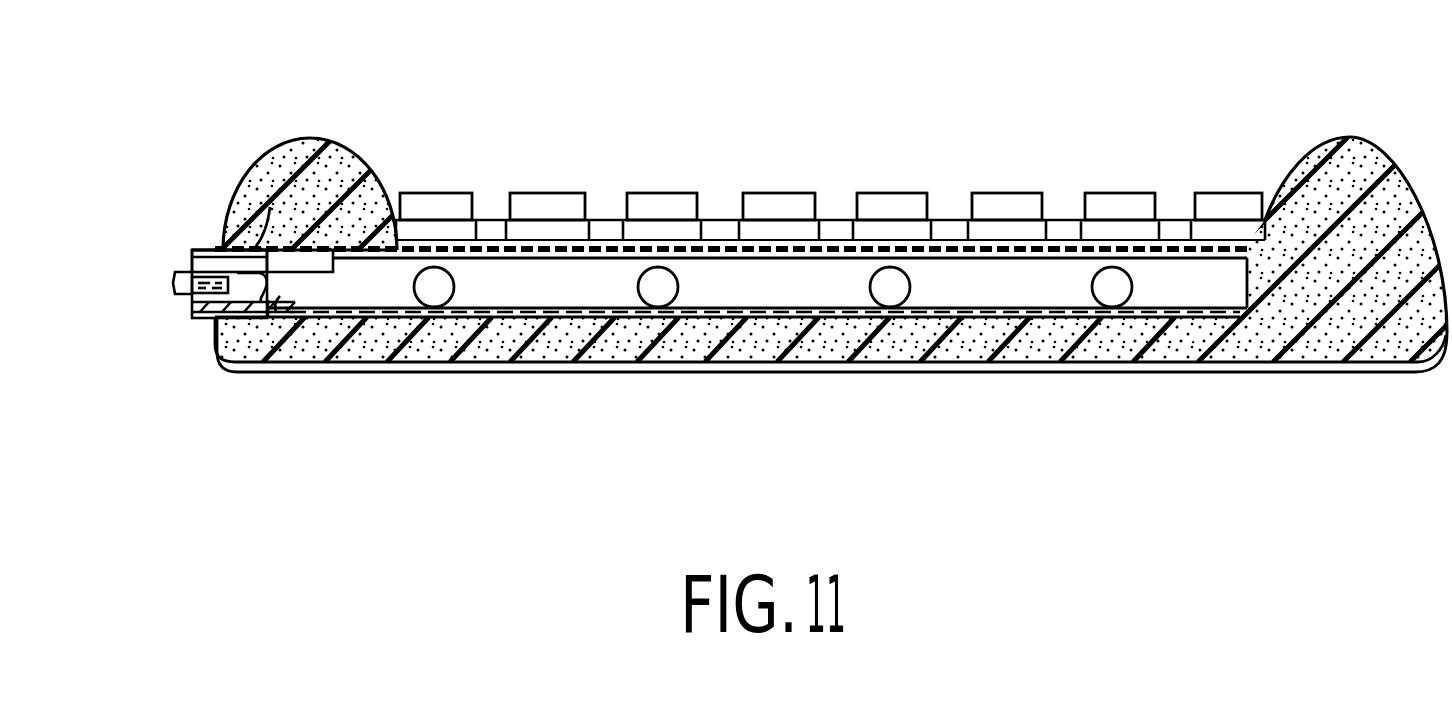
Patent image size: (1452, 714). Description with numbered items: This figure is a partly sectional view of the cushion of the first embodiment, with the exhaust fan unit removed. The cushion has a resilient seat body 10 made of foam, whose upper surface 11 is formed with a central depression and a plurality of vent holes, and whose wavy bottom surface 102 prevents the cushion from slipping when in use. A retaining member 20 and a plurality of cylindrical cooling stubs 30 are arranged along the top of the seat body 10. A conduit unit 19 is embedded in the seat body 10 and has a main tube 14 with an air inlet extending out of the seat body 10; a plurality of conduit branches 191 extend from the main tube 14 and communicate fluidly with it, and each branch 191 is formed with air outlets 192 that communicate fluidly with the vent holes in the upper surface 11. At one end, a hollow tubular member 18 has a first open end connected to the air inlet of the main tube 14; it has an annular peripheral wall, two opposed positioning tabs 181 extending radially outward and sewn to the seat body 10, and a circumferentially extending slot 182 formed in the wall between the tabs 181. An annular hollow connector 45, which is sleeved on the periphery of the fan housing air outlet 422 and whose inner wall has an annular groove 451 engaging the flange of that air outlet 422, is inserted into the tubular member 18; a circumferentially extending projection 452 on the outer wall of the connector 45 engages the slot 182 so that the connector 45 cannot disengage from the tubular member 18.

The resilient seat body 10 is at (487, 333).
The wavy bottom surface 102 is at (558, 370).
The upper surface 11 is at (948, 242).
The main tube 14 is at (293, 250).
The hollow tubular member 18 is at (214, 250).
The positioning tabs 181 is at (186, 296).
The circumferentially extending slot 182 is at (270, 207).
The conduit unit 19 is at (727, 270).
The conduit branches 191 is at (660, 290).
The air outlets 192 is at (1003, 258).
The retaining member 20 is at (835, 222).
The cylindrical cooling stubs 30 is at (565, 193).
The annular hollow connector 45 is at (192, 262).
The annular groove 451 is at (237, 296).
The circumferentially extending projection 452 is at (292, 260).
The air outlet 422 is at (280, 312).